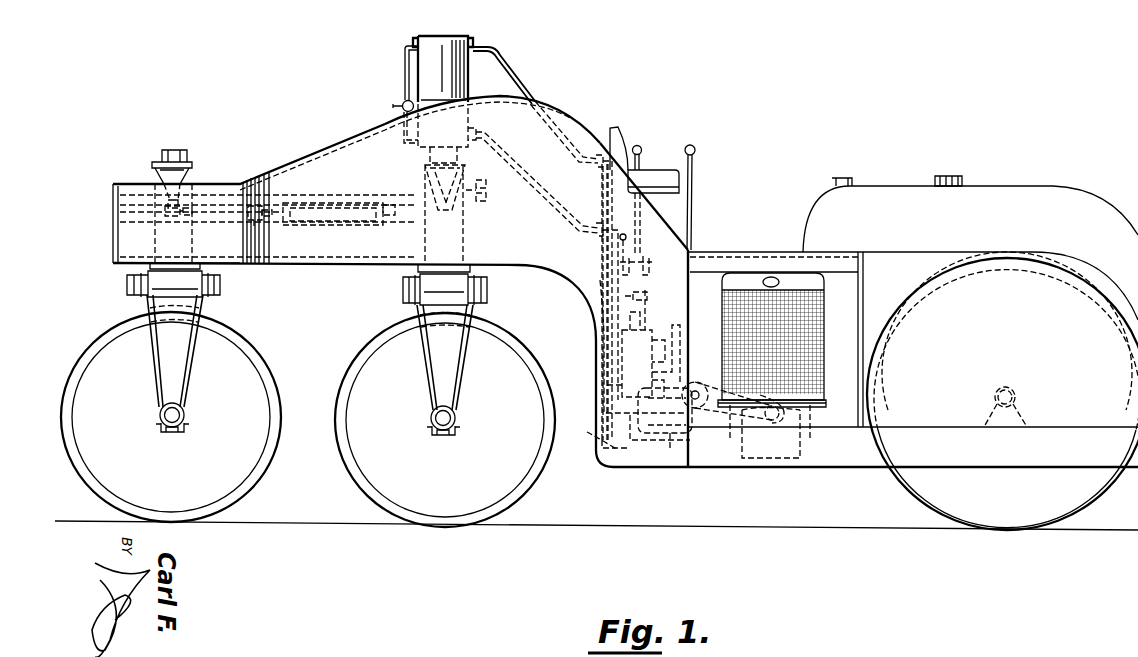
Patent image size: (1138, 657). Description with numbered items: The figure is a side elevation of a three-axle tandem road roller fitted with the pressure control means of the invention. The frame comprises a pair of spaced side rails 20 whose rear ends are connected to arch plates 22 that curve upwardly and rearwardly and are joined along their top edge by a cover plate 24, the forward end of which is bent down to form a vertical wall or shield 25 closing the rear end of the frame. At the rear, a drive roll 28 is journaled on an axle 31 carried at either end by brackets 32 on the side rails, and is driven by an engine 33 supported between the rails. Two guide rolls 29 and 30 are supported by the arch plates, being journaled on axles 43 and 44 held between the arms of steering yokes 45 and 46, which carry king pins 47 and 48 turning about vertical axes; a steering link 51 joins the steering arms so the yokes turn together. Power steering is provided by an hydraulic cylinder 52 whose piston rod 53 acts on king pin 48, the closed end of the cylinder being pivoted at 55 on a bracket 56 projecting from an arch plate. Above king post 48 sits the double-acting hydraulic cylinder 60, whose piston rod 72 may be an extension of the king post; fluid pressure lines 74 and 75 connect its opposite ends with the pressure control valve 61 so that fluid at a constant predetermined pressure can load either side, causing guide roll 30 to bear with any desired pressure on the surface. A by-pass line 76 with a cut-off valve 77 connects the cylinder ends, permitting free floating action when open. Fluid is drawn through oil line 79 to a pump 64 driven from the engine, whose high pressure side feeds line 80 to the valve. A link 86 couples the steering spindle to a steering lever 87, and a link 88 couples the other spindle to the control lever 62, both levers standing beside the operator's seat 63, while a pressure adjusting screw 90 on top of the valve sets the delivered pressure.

The side rail 20 is at (850, 458).
The arch plate 22 is at (575, 126).
The cover plate 24 is at (347, 157).
The vertical wall or shield 25 is at (577, 436).
The drive roll 28 is at (1085, 487).
The guide roll 29 is at (231, 343).
The guide roll 30 is at (353, 470).
The axle 31 is at (1013, 389).
The bracket 32 is at (1023, 399).
The engine 33 is at (788, 446).
The axle 43 is at (185, 412).
The axle 44 is at (457, 414).
The steering yoke 45 is at (181, 364).
The steering yoke 46 is at (458, 361).
The king pin 47 is at (155, 236).
The king pin 48 is at (466, 249).
The steering link 51 is at (218, 217).
The hydraulic cylinder 52 is at (348, 227).
The piston rod 53 is at (397, 222).
The pivot 55 is at (252, 221).
The bracket 56 is at (263, 223).
The double-acting hydraulic cylinder 60 is at (430, 60).
The pressure control valve 61 is at (603, 388).
The control lever 62 is at (626, 232).
The operator's seat 63 is at (656, 172).
The pump 64 is at (690, 381).
The piston rod 72 is at (430, 151).
The fluid pressure line 74 is at (499, 60).
The fluid pressure line 75 is at (501, 157).
The by-pass line 76 is at (404, 80).
The cut-off valve 77 is at (401, 104).
The oil line 79 is at (681, 441).
The line 80 is at (661, 406).
The link 86 is at (647, 290).
The steering lever 87 is at (637, 145).
The link 88 is at (628, 318).
The pressure adjusting screw 90 is at (642, 355).